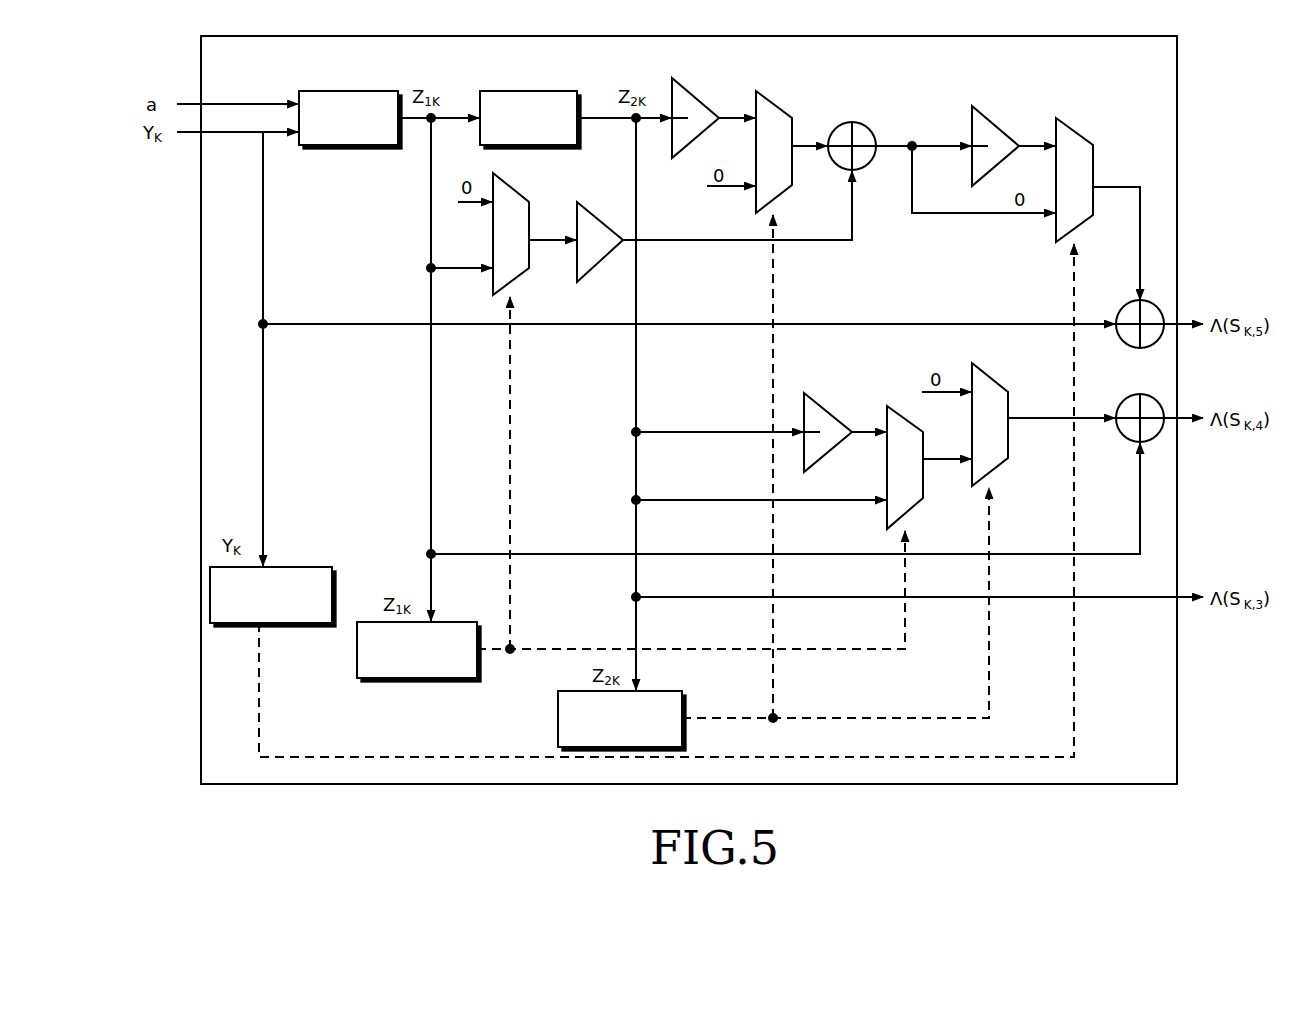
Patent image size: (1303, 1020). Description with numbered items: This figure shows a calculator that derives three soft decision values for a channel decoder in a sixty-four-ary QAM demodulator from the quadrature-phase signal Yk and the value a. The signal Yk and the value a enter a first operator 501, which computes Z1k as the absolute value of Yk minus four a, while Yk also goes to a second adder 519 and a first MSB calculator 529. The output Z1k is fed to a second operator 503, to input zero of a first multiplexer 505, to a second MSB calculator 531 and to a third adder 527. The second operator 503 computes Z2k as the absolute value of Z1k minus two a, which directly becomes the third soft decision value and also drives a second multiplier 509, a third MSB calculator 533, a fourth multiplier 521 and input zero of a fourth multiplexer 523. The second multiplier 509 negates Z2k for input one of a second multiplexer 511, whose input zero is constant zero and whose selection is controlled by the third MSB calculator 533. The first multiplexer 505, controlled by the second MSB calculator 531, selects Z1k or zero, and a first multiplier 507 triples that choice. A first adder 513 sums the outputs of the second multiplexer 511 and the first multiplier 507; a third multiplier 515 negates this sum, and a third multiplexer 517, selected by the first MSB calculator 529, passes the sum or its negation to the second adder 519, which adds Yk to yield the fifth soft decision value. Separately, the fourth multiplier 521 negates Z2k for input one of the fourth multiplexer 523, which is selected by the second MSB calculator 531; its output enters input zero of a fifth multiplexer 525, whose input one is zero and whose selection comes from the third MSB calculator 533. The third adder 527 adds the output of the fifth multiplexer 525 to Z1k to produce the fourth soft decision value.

The first operator 501 is at (345, 90).
The second operator 503 is at (528, 90).
The first multiplexer 505 is at (530, 210).
The first multiplier 507 is at (597, 218).
The second multiplier 509 is at (700, 96).
The second multiplexer 511 is at (776, 101).
The first adder 513 is at (852, 121).
The third multiplier 515 is at (1000, 122).
The third multiplexer 517 is at (1076, 128).
The second adder 519 is at (1124, 306).
The fourth multiplier 521 is at (830, 409).
The fourth multiplexer 523 is at (924, 488).
The fifth multiplexer 525 is at (990, 386).
The third adder 527 is at (1122, 401).
The first MSB calculator 529 is at (286, 628).
The second MSB calculator 531 is at (430, 683).
The third MSB calculator 533 is at (557, 718).